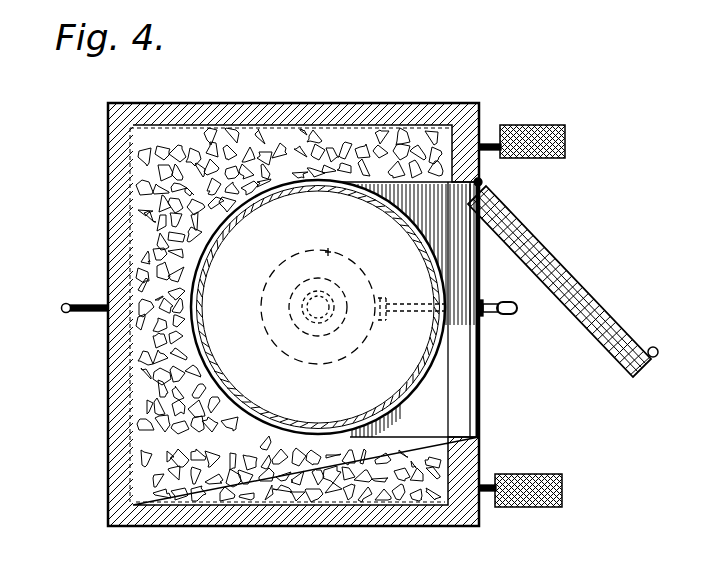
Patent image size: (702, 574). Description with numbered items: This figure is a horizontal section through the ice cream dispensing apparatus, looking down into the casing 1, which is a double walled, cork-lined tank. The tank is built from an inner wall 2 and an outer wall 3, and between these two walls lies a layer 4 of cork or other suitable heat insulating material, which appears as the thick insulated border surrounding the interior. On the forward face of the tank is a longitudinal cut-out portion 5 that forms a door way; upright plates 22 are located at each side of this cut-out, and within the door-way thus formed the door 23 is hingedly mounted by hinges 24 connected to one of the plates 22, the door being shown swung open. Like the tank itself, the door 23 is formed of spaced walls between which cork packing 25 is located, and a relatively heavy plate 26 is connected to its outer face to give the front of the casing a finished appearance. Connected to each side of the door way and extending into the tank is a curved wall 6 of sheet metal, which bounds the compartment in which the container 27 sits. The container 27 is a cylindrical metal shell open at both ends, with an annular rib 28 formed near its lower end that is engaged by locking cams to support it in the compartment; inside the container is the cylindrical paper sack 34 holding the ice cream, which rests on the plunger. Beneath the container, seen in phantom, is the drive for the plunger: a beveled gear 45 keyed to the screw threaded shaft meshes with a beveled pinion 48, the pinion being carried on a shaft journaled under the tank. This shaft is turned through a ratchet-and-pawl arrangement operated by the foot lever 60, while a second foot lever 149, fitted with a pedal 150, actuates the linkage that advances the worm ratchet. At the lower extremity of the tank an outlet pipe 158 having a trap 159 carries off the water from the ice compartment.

The casing 1 is at (100, 447).
The inner wall 2 is at (313, 527).
The outer wall 3 is at (240, 527).
The layer of cork 4 is at (110, 381).
The cut-out portion 5 is at (471, 433).
The curved wall 6 is at (433, 437).
The upright plates 22 is at (481, 110).
The door 23 is at (553, 257).
The hinges 24 is at (483, 182).
The cork packing 25 is at (585, 290).
The plate 26 is at (608, 318).
The container 27 is at (436, 281).
The annular rib 28 is at (443, 356).
The paper sack 34 is at (287, 416).
The beveled gear 45 is at (318, 294).
The beveled pinion 48 is at (380, 320).
The foot lever 60 is at (503, 507).
The foot lever 149 is at (488, 135).
The pedal 150 is at (565, 139).
The outlet pipe 158 is at (90, 317).
The trap 159 is at (72, 303).